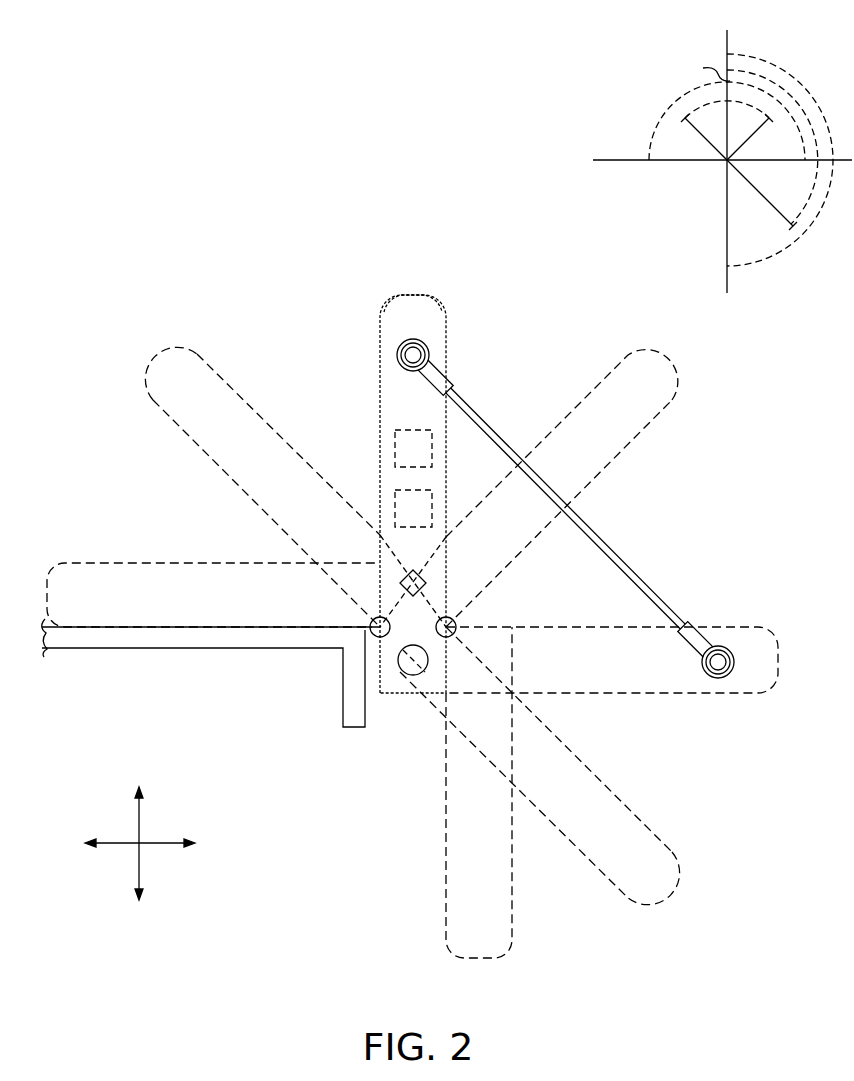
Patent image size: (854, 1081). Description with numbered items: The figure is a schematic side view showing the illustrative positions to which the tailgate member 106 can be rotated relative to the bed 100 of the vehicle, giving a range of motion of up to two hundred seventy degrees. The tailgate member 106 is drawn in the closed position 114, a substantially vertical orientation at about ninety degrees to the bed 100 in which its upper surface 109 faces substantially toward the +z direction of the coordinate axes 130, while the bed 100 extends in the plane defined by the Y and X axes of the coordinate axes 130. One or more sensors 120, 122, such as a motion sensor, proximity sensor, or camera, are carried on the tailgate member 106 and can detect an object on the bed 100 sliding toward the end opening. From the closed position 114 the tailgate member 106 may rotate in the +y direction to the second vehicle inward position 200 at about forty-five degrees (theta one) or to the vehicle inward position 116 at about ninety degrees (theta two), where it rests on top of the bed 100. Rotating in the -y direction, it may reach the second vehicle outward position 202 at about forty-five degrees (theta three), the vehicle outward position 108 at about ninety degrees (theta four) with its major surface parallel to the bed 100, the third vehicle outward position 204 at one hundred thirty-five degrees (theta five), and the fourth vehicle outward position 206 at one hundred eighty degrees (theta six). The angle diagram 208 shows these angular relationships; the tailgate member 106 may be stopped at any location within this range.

The bed 100 is at (165, 636).
The tailgate member 106 is at (402, 332).
The vehicle outward position 108 is at (777, 617).
The upper surface 109 is at (408, 296).
The closed position 114 is at (460, 364).
The vehicle inward position 116 is at (135, 557).
The sensor 120 is at (395, 448).
The sensor 122 is at (395, 507).
The coordinate axes 130 is at (88, 788).
The second vehicle inward position 200 is at (160, 360).
The second vehicle outward position 202 is at (676, 421).
The third vehicle outward position 204 is at (656, 816).
The fourth vehicle outward position 206 is at (428, 790).
The angle diagram 208 is at (785, 280).